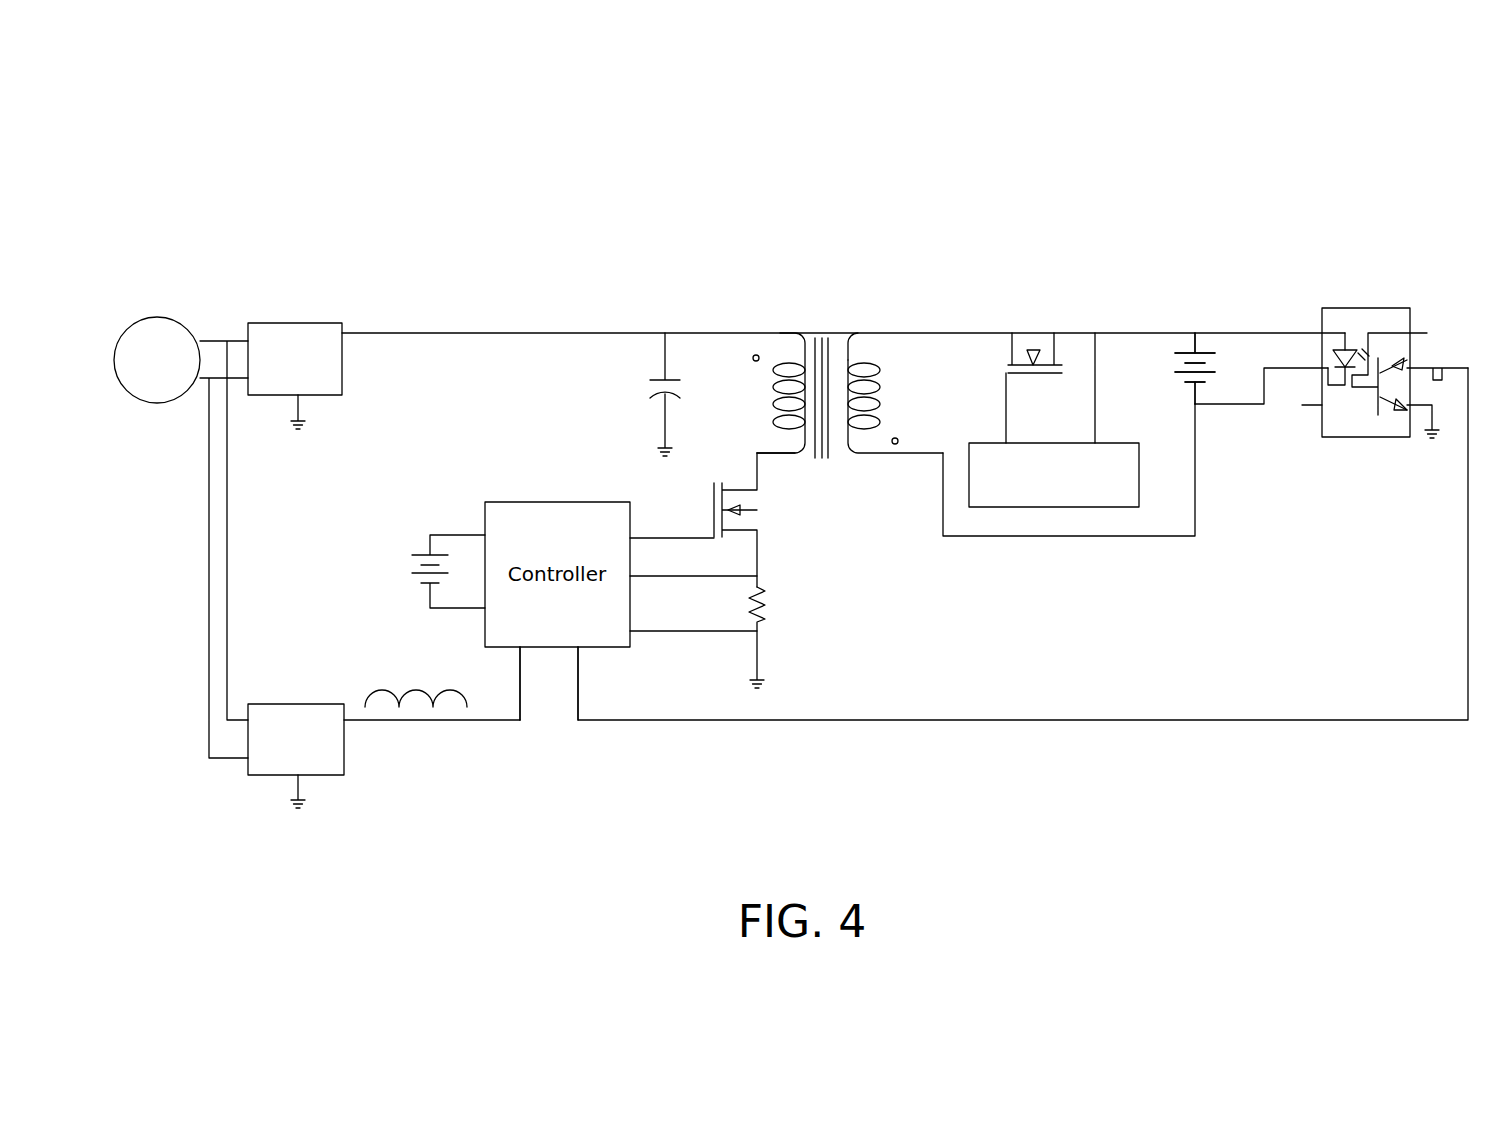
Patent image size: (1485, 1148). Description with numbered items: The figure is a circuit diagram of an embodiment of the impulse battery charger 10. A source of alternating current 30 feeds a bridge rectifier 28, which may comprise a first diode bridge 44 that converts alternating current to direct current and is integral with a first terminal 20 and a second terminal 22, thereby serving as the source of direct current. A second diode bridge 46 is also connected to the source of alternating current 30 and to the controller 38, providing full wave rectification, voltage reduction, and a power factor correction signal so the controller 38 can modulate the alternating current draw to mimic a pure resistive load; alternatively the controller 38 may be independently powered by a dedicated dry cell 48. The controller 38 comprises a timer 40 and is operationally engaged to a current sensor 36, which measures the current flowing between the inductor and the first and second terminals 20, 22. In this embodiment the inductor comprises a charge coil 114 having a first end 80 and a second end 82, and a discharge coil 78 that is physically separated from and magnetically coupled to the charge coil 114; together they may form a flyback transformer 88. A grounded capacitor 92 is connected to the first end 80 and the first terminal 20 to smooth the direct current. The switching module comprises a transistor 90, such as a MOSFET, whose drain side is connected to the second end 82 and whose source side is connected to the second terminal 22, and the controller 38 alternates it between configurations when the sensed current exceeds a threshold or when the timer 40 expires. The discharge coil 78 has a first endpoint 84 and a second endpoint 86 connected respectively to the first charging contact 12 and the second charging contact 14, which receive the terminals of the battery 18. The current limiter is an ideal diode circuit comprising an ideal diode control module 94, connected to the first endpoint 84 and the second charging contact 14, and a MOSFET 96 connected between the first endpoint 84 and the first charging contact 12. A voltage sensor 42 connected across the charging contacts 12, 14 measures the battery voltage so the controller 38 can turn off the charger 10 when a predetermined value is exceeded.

The impulse battery charger 10 is at (1043, 152).
The first charging contact 12 is at (1197, 330).
The second charging contact 14 is at (1194, 405).
The battery 18 is at (1174, 362).
The first terminal 20 is at (1191, 330).
The second terminal 22 is at (1197, 407).
The bridge rectifier 28 is at (268, 323).
The source of alternating current 30 is at (133, 322).
The current sensor 36 is at (763, 610).
The controller 38 is at (555, 647).
The timer 40 is at (608, 647).
The voltage sensor 42 is at (1367, 306).
The first diode bridge 44 is at (312, 323).
The second diode bridge 46 is at (253, 777).
The dedicated dry cell 48 is at (413, 567).
The discharge coil 78 is at (868, 382).
The first end 80 is at (780, 333).
The second end 82 is at (783, 455).
The first endpoint 84 is at (858, 333).
The second endpoint 86 is at (858, 455).
The flyback transformer 88 is at (822, 340).
The transistor 90 is at (757, 502).
The grounded capacitor 92 is at (647, 380).
The ideal diode control module 94 is at (1138, 441).
The MOSFET 96 is at (1041, 334).
The charge coil 114 is at (773, 385).